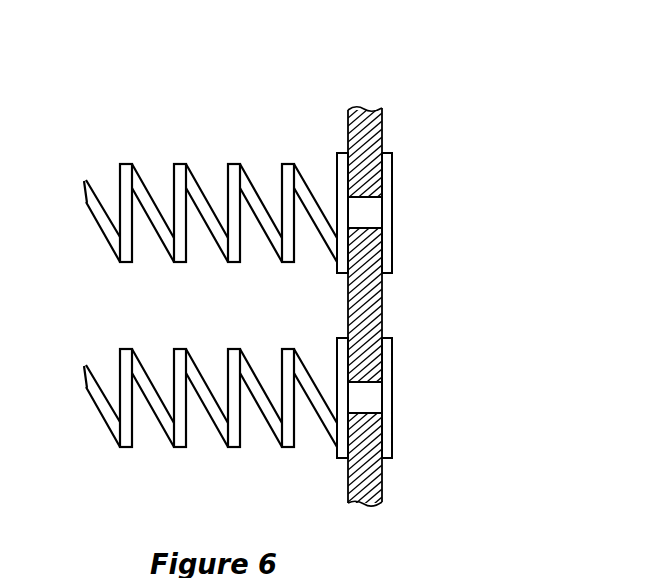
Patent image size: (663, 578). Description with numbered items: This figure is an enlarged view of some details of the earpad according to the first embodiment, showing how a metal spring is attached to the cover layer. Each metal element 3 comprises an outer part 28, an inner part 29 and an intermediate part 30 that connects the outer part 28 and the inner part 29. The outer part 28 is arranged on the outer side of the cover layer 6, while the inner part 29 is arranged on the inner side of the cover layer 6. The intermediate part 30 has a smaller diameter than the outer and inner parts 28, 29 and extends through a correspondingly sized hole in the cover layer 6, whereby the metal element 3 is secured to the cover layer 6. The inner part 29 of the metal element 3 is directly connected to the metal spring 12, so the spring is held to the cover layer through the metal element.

The metal element 3 is at (427, 266).
The cover layer 6 is at (373, 140).
The metal spring 12 is at (127, 202).
The outer part 28 is at (387, 232).
The inner part 29 is at (338, 175).
The intermediate part 30 is at (370, 213).